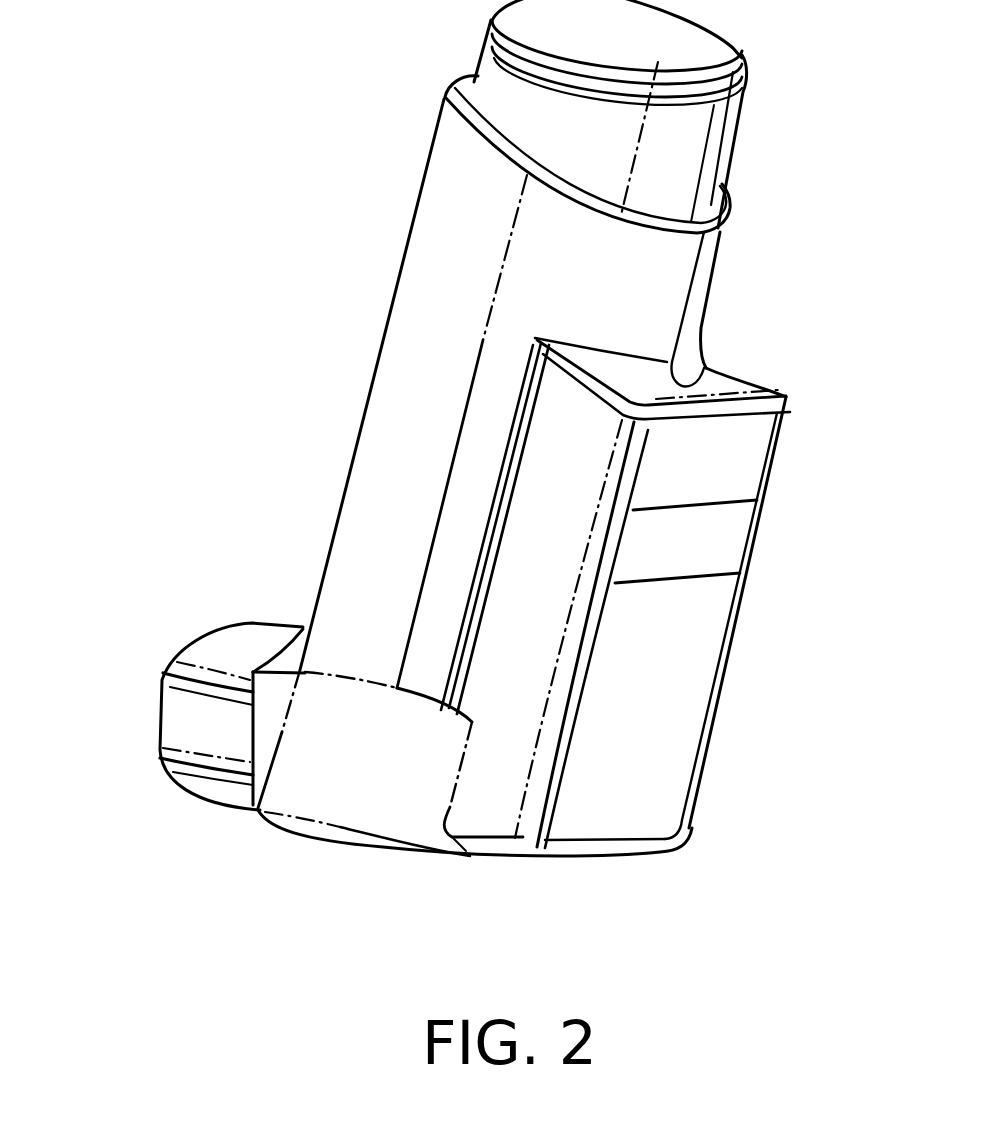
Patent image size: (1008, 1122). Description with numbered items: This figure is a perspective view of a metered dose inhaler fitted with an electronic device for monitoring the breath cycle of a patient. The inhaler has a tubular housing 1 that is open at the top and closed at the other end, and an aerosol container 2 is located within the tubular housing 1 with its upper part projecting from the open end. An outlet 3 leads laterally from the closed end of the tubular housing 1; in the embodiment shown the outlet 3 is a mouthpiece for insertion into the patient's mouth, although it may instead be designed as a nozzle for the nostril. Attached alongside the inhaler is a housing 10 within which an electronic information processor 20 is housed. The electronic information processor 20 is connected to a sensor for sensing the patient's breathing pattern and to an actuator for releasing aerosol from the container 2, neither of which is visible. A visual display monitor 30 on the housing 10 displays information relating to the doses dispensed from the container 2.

The tubular housing 1 is at (723, 252).
The aerosol container 2 is at (740, 130).
The outlet 3 is at (157, 730).
The housing 10 is at (690, 728).
The electronic information processor 20 is at (745, 383).
The visual display monitor 30 is at (747, 550).